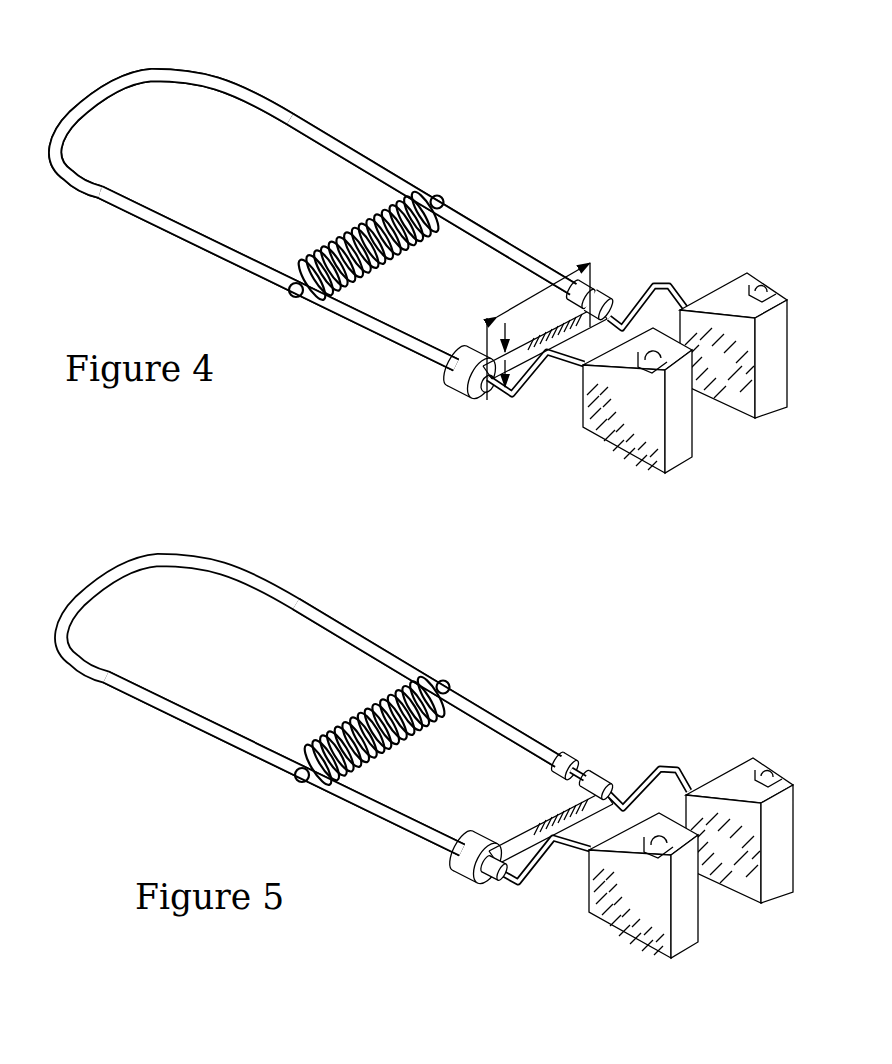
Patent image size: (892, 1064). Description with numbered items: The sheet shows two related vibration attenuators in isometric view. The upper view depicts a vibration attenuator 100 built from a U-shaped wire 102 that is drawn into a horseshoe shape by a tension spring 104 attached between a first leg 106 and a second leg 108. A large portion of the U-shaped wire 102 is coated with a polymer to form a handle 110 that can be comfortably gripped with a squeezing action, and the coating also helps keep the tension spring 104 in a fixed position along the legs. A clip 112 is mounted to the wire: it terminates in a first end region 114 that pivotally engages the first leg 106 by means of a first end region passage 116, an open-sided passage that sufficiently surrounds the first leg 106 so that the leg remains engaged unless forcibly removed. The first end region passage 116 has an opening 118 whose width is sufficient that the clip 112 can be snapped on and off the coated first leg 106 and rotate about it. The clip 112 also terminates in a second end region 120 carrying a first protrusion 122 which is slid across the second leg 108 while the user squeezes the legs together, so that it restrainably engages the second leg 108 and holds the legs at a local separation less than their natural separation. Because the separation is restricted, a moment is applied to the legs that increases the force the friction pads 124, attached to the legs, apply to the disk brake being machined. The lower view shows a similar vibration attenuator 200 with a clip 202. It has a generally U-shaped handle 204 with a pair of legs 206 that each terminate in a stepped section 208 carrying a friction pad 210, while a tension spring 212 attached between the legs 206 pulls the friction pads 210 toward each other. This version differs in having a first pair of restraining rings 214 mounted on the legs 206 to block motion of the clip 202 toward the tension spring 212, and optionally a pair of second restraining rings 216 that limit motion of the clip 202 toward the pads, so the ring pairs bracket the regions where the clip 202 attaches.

In FIG. 4, the vibration attenuator 100 is at (545, 126).
In FIG. 4, the U-shaped wire 102 is at (270, 86).
In FIG. 4, the tension spring 104 is at (348, 243).
In FIG. 4, the first leg 106 is at (362, 325).
In FIG. 4, the second leg 108 is at (396, 178).
In FIG. 4, the handle 110 is at (132, 210).
In FIG. 4, the clip 112 is at (428, 382).
In FIG. 4, the first end region 114 is at (453, 393).
In FIG. 4, the first end region passage 116 is at (468, 354).
In FIG. 4, the opening 118 is at (492, 353).
In FIG. 4, the second end region 120 is at (602, 274).
In FIG. 4, the first protrusion 122 is at (604, 312).
In FIG. 4, the friction pads 124 is at (745, 407).
In FIG. 5, the vibration attenuator 200 is at (427, 750).
In FIG. 5, the clip 202 is at (551, 779).
In FIG. 5, the U-shaped handle 204 is at (310, 667).
In FIG. 5, the legs 206 is at (332, 730).
In FIG. 5, the stepped section 208 is at (593, 812).
In FIG. 5, the friction pad 210 is at (691, 890).
In FIG. 5, the tension spring 212 is at (381, 708).
In FIG. 5, the first pair of restraining rings 214 is at (490, 819).
In FIG. 5, the second restraining rings 216 is at (543, 834).